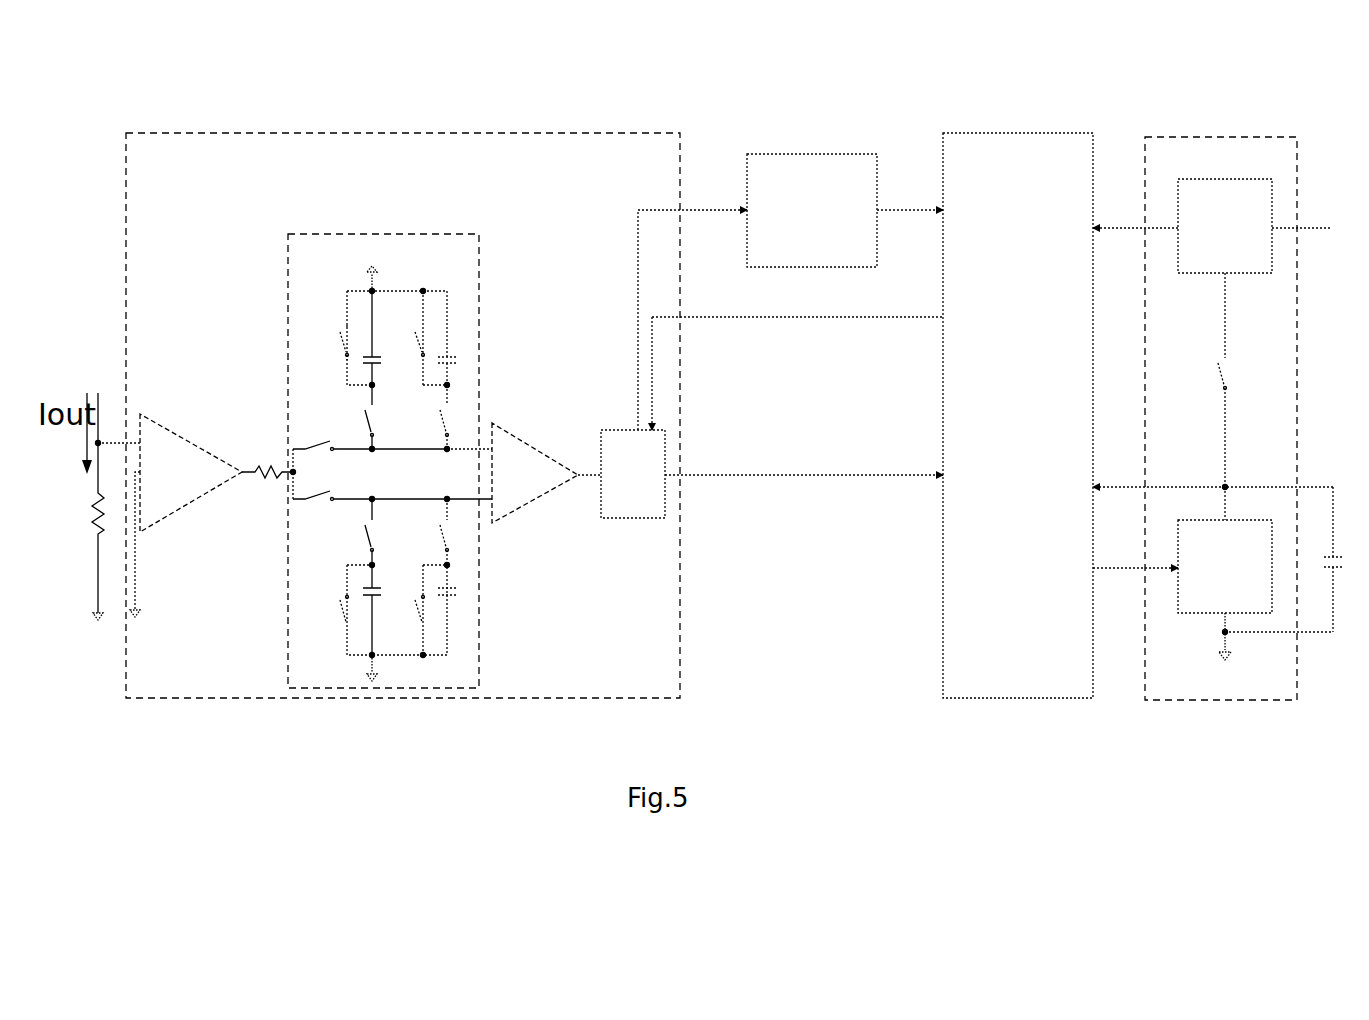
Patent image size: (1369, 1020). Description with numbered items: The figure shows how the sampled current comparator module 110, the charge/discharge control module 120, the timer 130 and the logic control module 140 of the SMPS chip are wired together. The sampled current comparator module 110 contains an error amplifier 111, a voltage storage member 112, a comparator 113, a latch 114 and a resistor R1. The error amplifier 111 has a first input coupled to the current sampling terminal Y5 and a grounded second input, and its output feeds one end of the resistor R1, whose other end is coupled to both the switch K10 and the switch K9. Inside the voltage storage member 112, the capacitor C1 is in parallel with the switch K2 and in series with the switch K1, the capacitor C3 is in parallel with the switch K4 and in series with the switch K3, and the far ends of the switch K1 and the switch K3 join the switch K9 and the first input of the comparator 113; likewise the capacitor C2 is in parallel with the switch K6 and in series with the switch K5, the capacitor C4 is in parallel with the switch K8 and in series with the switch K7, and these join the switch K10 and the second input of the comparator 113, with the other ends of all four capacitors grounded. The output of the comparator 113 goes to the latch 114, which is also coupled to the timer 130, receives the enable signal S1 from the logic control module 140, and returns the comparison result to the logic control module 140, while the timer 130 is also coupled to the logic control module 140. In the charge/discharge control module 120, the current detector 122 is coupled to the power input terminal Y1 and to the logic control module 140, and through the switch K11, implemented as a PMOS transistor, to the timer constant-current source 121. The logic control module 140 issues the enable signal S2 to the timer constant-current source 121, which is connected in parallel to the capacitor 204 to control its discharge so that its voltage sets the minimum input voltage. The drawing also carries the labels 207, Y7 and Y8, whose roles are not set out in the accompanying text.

The sampled current comparator module 110 is at (545, 133).
The voltage storage member 112 is at (405, 234).
The error amplifier 111 is at (186, 515).
The comparator 113 is at (535, 473).
The latch 114 is at (633, 474).
The timer 130 is at (812, 210).
The logic control module 140 is at (1018, 415).
The charge/discharge control module 120 is at (1207, 137).
The current detector 122 is at (1225, 226).
The timer constant-current source 121 is at (1225, 566).
The sense resistor 207 is at (86, 506).
The capacitor 204 is at (1342, 559).
The resistor R1 is at (267, 463).
The switch K1 is at (382, 532).
The switch K2 is at (333, 618).
The switch K3 is at (457, 532).
The switch K4 is at (410, 610).
The switch K5 is at (382, 417).
The switch K6 is at (337, 333).
The switch K7 is at (457, 417).
The switch K8 is at (414, 338).
The switch K9 is at (316, 504).
The switch K10 is at (316, 454).
The switch K11 is at (1238, 380).
The capacitor C1 is at (381, 610).
The capacitor C2 is at (381, 338).
The capacitor C3 is at (456, 599).
The capacitor C4 is at (456, 338).
The power input terminal Y1 is at (1313, 220).
The current sampling terminal Y5 is at (118, 436).
The timing node Y7 is at (1224, 478).
The ground node Y8 is at (1291, 641).
The enable signal S1 is at (794, 373).
The enable signal S2 is at (1135, 579).